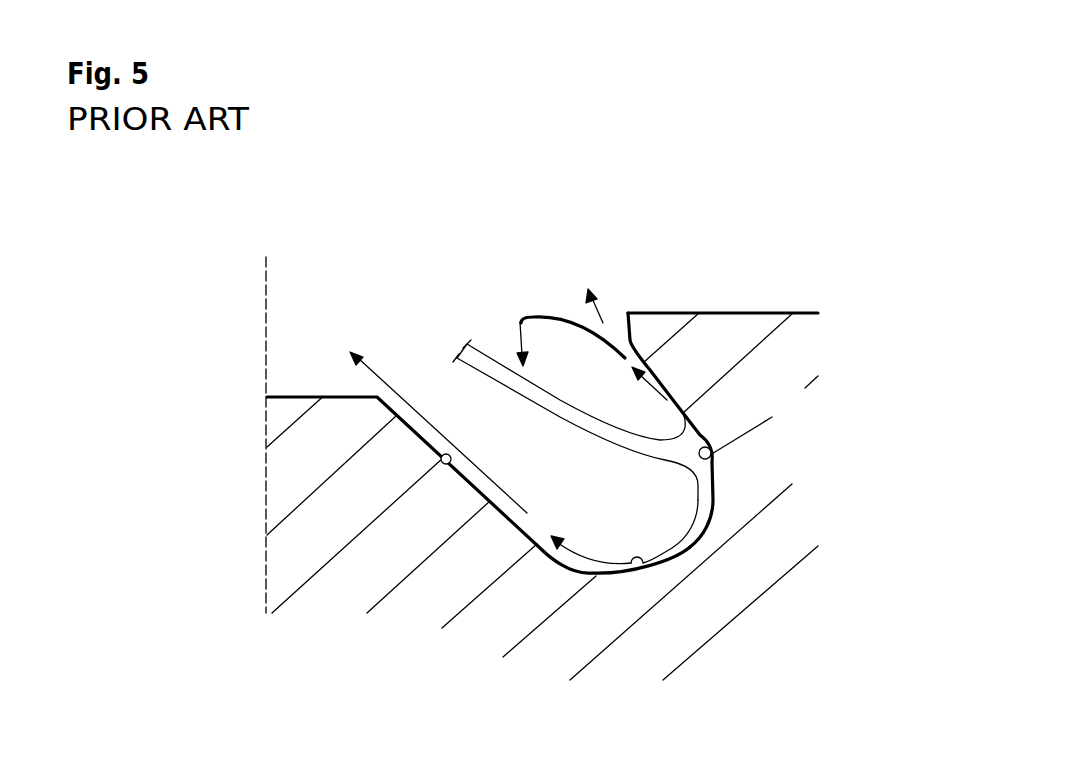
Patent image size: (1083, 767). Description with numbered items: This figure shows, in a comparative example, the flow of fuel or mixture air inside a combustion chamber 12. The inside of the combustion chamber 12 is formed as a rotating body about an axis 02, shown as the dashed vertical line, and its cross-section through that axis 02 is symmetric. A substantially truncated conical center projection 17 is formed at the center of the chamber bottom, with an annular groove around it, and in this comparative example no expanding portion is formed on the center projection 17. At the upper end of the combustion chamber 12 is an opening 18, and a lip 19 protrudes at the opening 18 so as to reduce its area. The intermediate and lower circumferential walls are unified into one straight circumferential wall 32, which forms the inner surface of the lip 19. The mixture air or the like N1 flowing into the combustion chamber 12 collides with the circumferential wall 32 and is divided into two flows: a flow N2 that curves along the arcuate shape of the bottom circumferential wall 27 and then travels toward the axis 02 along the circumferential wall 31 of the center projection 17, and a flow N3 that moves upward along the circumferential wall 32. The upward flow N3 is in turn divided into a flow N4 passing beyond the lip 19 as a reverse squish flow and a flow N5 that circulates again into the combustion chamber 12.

The axis 02 is at (262, 287).
The combustion chamber 12 is at (358, 283).
The center projection 17 is at (283, 448).
The opening 18 is at (628, 313).
The lip 19 is at (683, 340).
The bottom circumferential wall 27 is at (643, 565).
The circumferential wall of the center projection 31 is at (443, 465).
The circumferential wall 32 is at (710, 451).
The mixture air flow N1 is at (491, 357).
The flow toward the axis N2 is at (407, 415).
The upward flow N3 is at (667, 402).
The reverse squish flow N4 is at (592, 302).
The circulating flow N5 is at (533, 313).